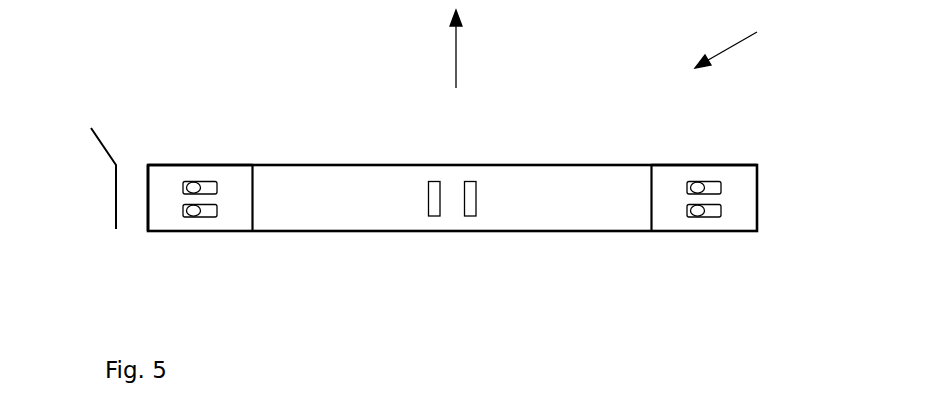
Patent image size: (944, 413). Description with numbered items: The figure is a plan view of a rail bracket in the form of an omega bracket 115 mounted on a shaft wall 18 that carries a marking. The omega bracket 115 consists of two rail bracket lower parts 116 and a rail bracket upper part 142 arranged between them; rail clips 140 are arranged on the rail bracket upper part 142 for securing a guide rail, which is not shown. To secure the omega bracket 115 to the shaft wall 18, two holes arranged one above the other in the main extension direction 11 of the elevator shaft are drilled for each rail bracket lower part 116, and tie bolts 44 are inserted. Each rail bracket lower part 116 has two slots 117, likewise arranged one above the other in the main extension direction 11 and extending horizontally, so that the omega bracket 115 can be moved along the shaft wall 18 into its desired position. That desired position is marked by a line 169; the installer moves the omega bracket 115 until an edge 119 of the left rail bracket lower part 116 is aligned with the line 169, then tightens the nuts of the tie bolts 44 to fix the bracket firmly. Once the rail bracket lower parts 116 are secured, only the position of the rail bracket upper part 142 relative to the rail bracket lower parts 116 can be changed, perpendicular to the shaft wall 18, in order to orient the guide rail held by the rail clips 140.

The shaft wall 18 is at (326, 38).
The main extension direction 11 is at (459, 33).
The omega bracket 115 is at (749, 41).
The rail bracket lower part 116 is at (172, 162).
The slot 117 is at (220, 185).
The tie bolt 44 is at (194, 185).
The edge 119 is at (148, 198).
The rail clip 140 is at (452, 210).
The rail bracket upper part 142 is at (555, 231).
The line 169 is at (83, 165).